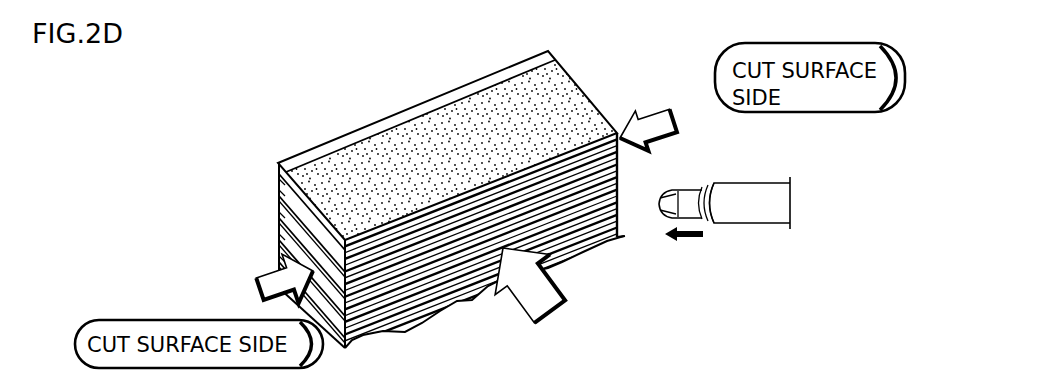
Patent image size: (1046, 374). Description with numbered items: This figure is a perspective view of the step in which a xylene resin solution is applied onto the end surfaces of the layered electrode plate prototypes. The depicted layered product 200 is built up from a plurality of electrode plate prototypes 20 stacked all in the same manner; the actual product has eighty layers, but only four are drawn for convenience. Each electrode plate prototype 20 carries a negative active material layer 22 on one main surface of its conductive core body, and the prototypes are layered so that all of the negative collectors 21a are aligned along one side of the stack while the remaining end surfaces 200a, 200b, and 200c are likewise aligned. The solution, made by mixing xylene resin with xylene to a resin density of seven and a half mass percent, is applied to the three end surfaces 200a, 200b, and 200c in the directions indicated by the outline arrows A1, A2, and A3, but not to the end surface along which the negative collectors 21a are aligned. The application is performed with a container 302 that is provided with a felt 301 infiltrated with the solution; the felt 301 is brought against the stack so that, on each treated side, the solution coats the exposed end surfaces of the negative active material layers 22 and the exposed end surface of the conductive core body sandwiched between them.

The layered product 200 is at (461, 186).
The end surface 200a is at (448, 270).
The end surface 200b is at (295, 222).
The end surface 200c is at (609, 107).
The electrode plate prototype 20 is at (276, 152).
The negative collector 21a is at (438, 103).
The negative active material layer 22 is at (558, 78).
The felt 301 is at (690, 219).
The container 302 is at (748, 215).
The outline arrow A1 is at (529, 286).
The outline arrow A2 is at (267, 283).
The outline arrow A3 is at (664, 129).